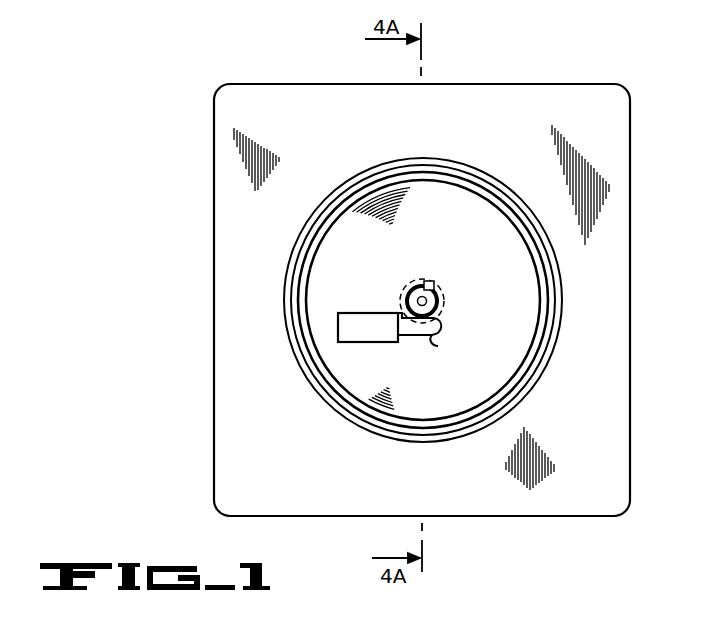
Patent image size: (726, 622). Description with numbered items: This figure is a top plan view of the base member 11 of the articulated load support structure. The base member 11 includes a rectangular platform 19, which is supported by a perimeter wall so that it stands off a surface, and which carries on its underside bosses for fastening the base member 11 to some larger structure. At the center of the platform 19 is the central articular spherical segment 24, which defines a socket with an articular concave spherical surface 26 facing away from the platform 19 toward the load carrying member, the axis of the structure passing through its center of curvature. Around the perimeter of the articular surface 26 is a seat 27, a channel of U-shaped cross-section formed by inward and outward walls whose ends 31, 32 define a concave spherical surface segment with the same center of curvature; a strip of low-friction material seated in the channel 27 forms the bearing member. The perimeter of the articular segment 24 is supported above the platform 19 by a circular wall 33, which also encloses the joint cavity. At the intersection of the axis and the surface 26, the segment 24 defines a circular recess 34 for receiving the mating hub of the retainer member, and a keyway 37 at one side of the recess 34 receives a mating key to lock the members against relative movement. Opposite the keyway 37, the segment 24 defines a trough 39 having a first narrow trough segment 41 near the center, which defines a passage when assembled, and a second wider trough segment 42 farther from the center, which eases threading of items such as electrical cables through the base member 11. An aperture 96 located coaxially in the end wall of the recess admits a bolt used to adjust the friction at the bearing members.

The base member 11 is at (470, 300).
The rectangular platform 19 is at (619, 121).
The central articular spherical segment 24 is at (297, 222).
The articular concave spherical surface 26 is at (497, 354).
The seat 27 is at (552, 307).
The end of inward wall 31 is at (506, 396).
The end of outward wall 32 is at (511, 409).
The circular wall 33 is at (325, 403).
The circular recess 34 is at (437, 292).
The keyway 37 is at (432, 281).
The trough 39 is at (389, 356).
The first narrow trough segment 41 is at (431, 338).
The second wider trough segment 42 is at (350, 326).
The aperture 96 is at (427, 302).